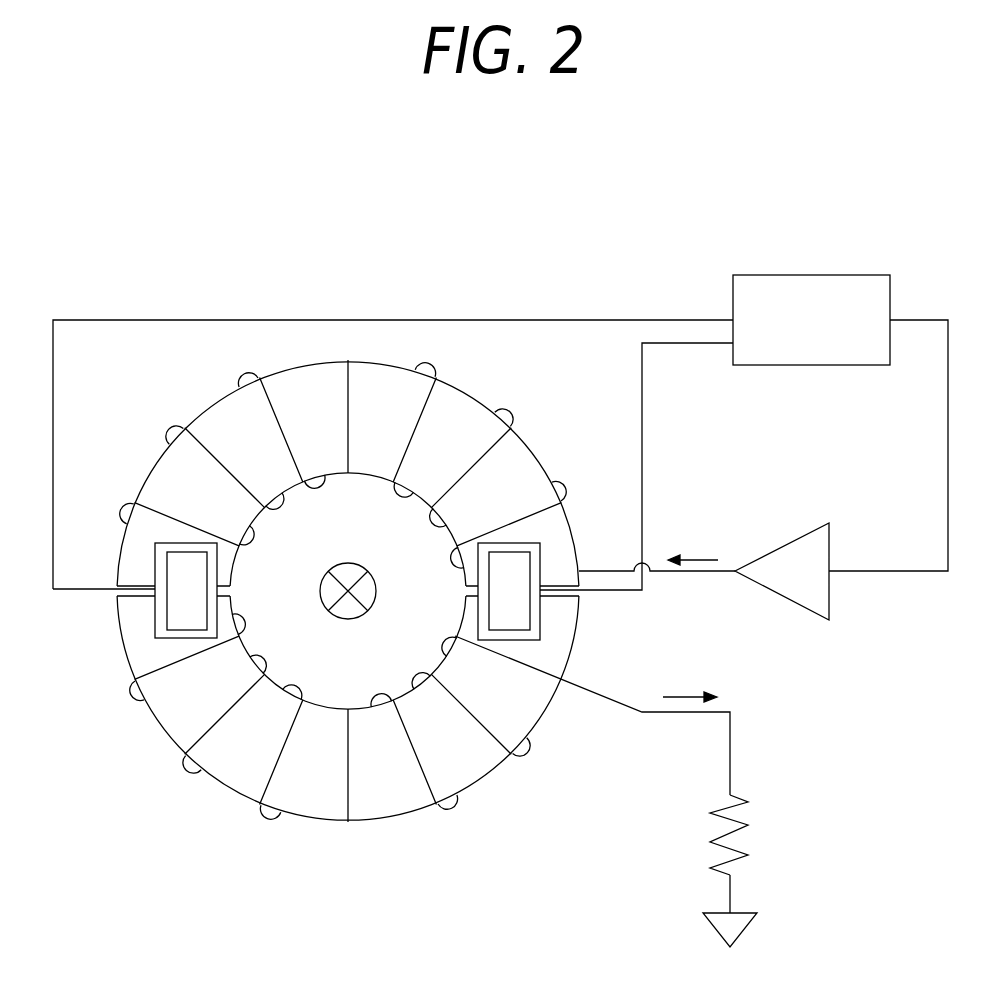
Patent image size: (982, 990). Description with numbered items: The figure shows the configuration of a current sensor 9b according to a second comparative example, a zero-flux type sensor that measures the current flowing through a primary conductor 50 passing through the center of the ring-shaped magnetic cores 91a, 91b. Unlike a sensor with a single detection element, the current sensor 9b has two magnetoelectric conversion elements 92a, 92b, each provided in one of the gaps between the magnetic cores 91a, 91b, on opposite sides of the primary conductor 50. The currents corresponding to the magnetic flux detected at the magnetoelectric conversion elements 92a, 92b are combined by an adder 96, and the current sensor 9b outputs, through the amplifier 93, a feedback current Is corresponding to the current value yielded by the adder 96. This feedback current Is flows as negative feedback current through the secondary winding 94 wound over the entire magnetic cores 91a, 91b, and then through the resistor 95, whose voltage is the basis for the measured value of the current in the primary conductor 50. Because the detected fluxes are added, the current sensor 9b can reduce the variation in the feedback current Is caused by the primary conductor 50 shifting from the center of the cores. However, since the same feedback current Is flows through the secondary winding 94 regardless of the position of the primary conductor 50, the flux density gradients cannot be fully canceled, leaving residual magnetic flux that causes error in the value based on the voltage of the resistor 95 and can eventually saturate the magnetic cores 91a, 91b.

The current sensor 9b is at (594, 207).
The adder 96 is at (808, 275).
The amplifier 93 is at (778, 548).
The resistor 95 is at (748, 822).
The secondary winding 94 is at (512, 404).
The magnetic core 91a is at (150, 472).
The magnetic core 91b is at (118, 623).
The magnetoelectric conversion element 92a is at (180, 617).
The magnetoelectric conversion element 92b is at (510, 605).
The primary conductor 50 is at (348, 620).